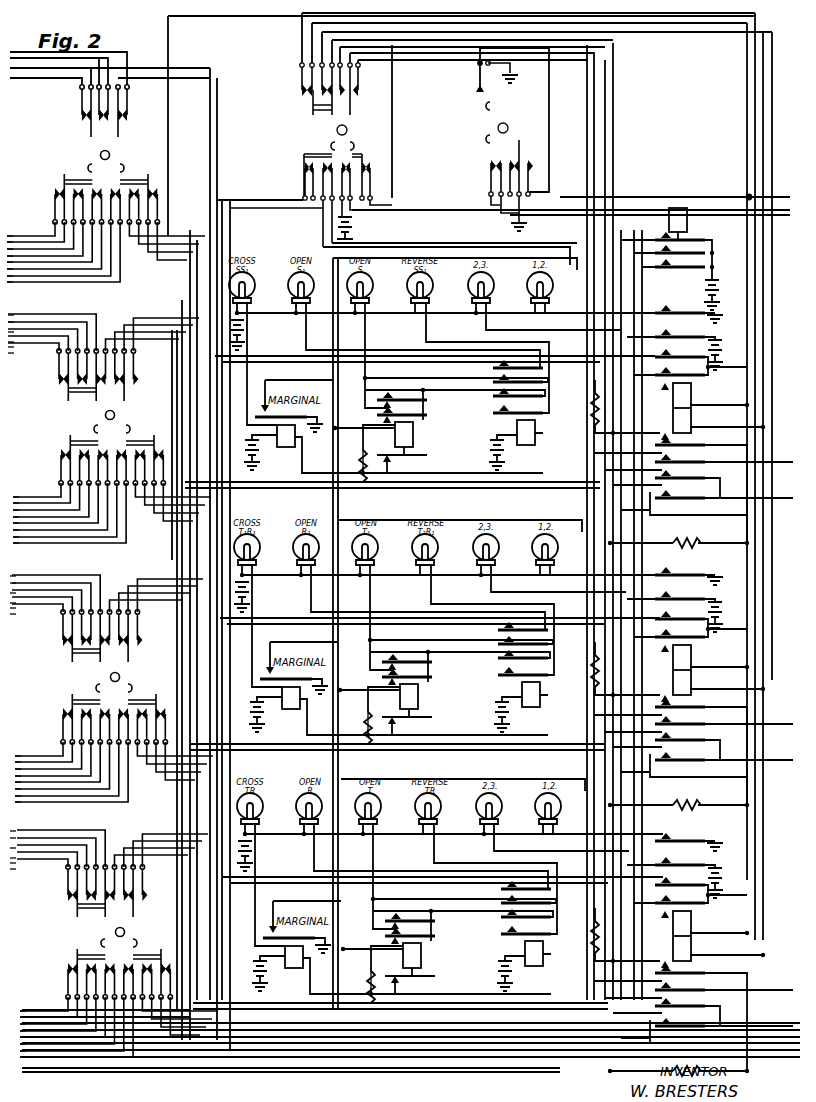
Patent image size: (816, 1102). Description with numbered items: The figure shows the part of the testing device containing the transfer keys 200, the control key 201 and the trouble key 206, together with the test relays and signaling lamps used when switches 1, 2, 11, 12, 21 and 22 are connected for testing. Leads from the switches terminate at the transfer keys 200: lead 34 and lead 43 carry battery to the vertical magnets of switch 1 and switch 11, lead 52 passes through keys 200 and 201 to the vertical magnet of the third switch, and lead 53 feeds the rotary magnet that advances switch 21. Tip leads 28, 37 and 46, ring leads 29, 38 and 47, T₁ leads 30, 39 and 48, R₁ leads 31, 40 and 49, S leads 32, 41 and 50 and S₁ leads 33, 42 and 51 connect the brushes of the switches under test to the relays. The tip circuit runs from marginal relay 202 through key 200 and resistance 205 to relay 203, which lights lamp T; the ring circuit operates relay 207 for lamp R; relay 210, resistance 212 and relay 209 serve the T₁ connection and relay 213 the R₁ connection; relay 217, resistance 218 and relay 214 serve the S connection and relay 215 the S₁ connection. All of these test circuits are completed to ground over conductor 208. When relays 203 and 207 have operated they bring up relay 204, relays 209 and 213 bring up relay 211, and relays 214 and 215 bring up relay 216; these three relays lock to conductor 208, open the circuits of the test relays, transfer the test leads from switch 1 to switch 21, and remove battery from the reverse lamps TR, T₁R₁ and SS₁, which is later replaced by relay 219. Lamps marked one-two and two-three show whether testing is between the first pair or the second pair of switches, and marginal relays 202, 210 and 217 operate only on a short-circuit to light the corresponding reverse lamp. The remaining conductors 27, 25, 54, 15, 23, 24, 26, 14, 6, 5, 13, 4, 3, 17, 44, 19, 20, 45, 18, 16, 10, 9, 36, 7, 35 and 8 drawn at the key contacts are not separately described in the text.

The transfer key 200 is at (128, 60).
The control key 201 is at (320, 155).
The trouble key 206 is at (494, 146).
The relay 219 is at (678, 208).
The lead 208 is at (748, 197).
The relay 216 is at (691, 392).
The relay 217 is at (286, 447).
The resistance 218 is at (358, 461).
The relay 214 is at (410, 447).
The relay 215 is at (526, 445).
The relay 210 is at (291, 709).
The resistance 212 is at (368, 715).
The relay 209 is at (415, 709).
The relay 213 is at (531, 707).
The relay 211 is at (691, 654).
The marginal relay 202 is at (294, 968).
The resistance 205 is at (355, 974).
The relay 203 is at (418, 968).
The relay 207 is at (534, 966).
The relay 204 is at (698, 921).
The conductor 27 is at (50, 68).
The conductor 25 is at (35, 71).
The lead 52 is at (32, 74).
The conductor 54 is at (57, 68).
The conductor 15 is at (17, 230).
The lead 42 is at (20, 242).
The conductor 23 is at (18, 249).
The lead 50 is at (25, 264).
The lead 51 is at (52, 253).
The conductor 24 is at (80, 266).
The lead 53 is at (107, 273).
The conductor 26 is at (133, 277).
The lead 41 is at (22, 313).
The conductor 14 is at (24, 322).
The conductor 6 is at (28, 332).
The lead 33 is at (28, 342).
The conductor 5 is at (30, 347).
The lead 32 is at (26, 353).
The switch 12 is at (36, 497).
The lead 39 is at (56, 497).
The conductor 13 is at (23, 515).
The lead 40 is at (48, 520).
The lead 48 is at (80, 527).
The switch 21 is at (108, 533).
The lead 49 is at (138, 539).
The switch 22 is at (165, 543).
The lead 31 is at (26, 573).
The conductor 4 is at (30, 582).
The conductor 3 is at (28, 590).
The lead 30 is at (28, 600).
The conductor 17 is at (24, 608).
The conductor 44 is at (23, 614).
The conductor 19 is at (38, 757).
The lead 46 is at (60, 757).
The conductor 20 is at (23, 770).
The lead 47 is at (51, 775).
The conductor 45 is at (80, 782).
The conductor 18 is at (110, 788).
The lead 43 is at (138, 794).
The conductor 16 is at (163, 798).
The lead 38 is at (28, 828).
The switch 11 is at (30, 836).
The conductor 10 is at (25, 845).
The lead 37 is at (30, 855).
The switch 2 is at (32, 863).
The lead 29 is at (26, 869).
The conductor 9 is at (38, 1012).
The conductor 36 is at (64, 1012).
The conductor 7 is at (30, 1040).
The lead 34 is at (53, 1045).
The lead 28 is at (85, 1050).
The switch 1 is at (113, 1056).
The conductor 35 is at (135, 1062).
The conductor 8 is at (163, 1066).